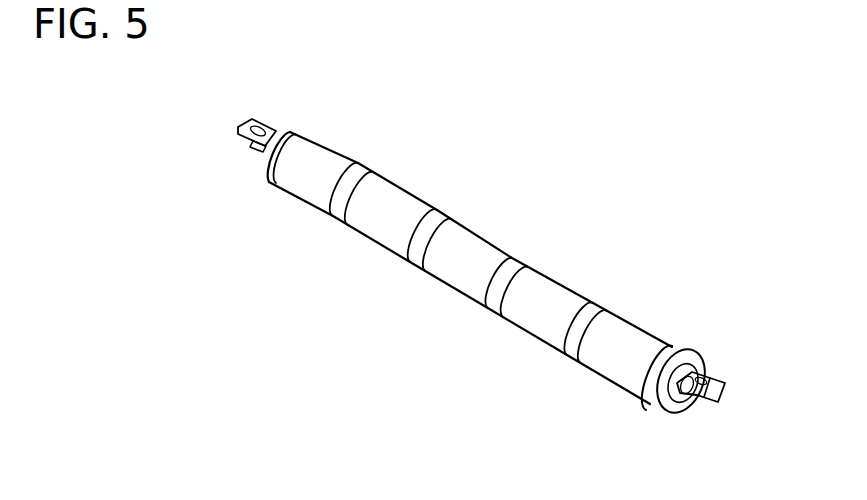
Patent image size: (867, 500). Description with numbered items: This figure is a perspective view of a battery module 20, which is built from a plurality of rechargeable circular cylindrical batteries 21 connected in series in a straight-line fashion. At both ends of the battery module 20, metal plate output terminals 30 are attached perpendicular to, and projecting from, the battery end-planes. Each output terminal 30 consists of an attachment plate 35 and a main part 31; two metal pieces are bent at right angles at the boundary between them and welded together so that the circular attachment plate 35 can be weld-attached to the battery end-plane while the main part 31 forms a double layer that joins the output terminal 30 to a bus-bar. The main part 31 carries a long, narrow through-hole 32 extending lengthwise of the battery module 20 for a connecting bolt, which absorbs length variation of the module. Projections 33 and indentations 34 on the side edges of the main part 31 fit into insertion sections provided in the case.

The battery module 20 is at (530, 207).
The battery 21 is at (381, 238).
The output terminal 30 is at (467, 278).
The main part 31 is at (261, 123).
The through-hole 32 is at (246, 124).
The projection 33 is at (716, 381).
The indentation 34 is at (251, 150).
The attachment plate 35 is at (290, 131).